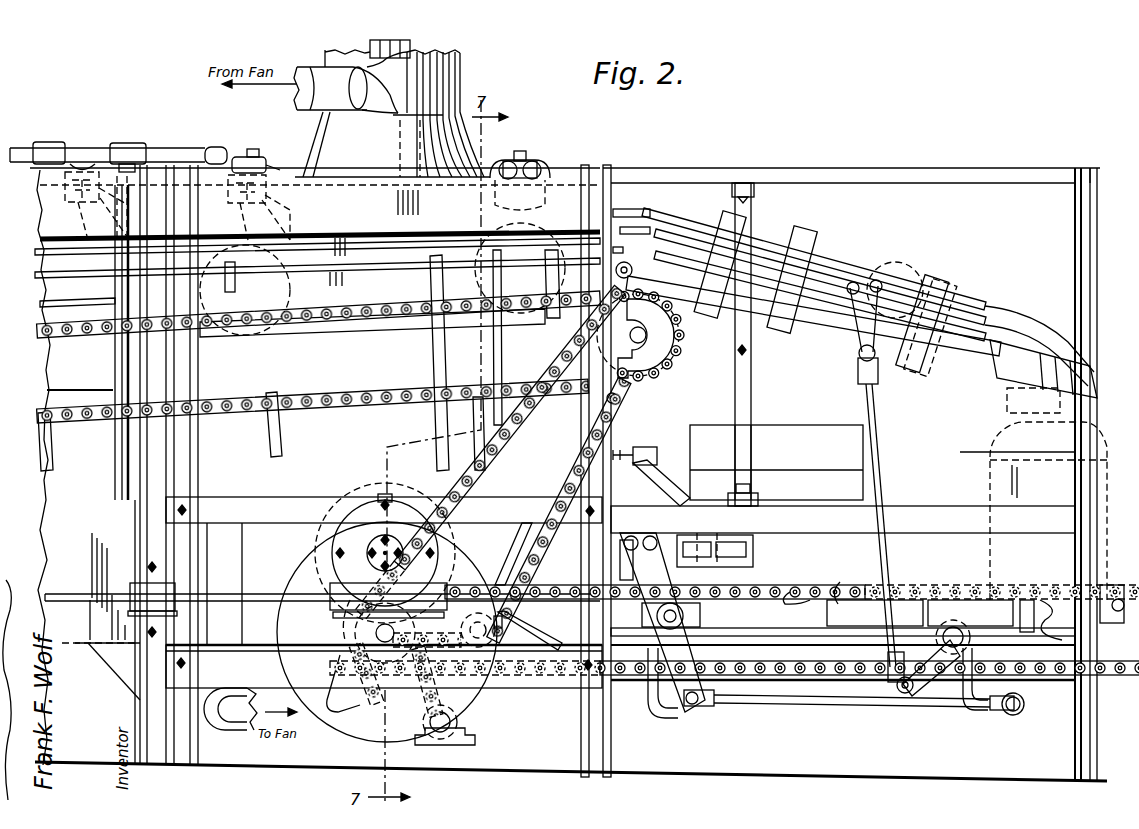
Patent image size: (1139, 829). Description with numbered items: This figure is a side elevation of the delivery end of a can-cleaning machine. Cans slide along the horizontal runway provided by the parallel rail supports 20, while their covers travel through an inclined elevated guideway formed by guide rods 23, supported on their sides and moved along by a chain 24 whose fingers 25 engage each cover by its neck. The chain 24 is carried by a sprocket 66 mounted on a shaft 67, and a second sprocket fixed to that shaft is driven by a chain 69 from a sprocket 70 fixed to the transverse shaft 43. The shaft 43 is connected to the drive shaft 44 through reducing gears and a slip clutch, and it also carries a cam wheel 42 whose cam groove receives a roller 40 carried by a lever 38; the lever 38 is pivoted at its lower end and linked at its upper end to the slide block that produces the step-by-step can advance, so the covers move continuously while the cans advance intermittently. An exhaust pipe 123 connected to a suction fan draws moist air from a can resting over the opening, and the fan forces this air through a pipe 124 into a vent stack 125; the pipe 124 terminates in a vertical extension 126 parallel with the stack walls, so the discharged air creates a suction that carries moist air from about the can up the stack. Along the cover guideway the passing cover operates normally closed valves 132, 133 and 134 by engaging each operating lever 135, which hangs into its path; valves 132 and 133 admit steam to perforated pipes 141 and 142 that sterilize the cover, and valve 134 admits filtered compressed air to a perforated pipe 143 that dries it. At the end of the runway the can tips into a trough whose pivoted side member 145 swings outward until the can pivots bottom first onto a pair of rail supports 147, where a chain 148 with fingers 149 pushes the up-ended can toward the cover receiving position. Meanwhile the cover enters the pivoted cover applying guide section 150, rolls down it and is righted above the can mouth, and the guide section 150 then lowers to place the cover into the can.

The vertical extension 126 is at (385, 46).
The vent stack 125 is at (460, 42).
The pipe 124 is at (317, 100).
The valve 132 is at (85, 160).
The valve 133 is at (245, 160).
The valve 134 is at (533, 162).
The operating lever 135 is at (45, 243).
The guide rods 23 is at (40, 276).
The perforated pipe 141 is at (106, 287).
The perforated pipe 142 is at (285, 276).
The fingers 25 is at (433, 266).
The chain 24 is at (378, 327).
The perforated pipe 143 is at (553, 320).
The sprocket 66 is at (652, 348).
The shaft 67 is at (645, 362).
The chain 69 is at (620, 410).
The cover applying guide section 150 is at (834, 266).
The side member 145 is at (808, 440).
The rail supports 20 is at (753, 473).
The exhaust pipe 123 is at (238, 552).
The drive shaft 44 is at (222, 598).
The sprocket 70 is at (335, 628).
The cam wheel 42 is at (472, 693).
The roller 40 is at (492, 636).
The transverse shaft 43 is at (366, 700).
The lever 38 is at (512, 578).
The chain 148 is at (808, 582).
The rail supports 147 is at (862, 612).
The fingers 149 is at (680, 706).